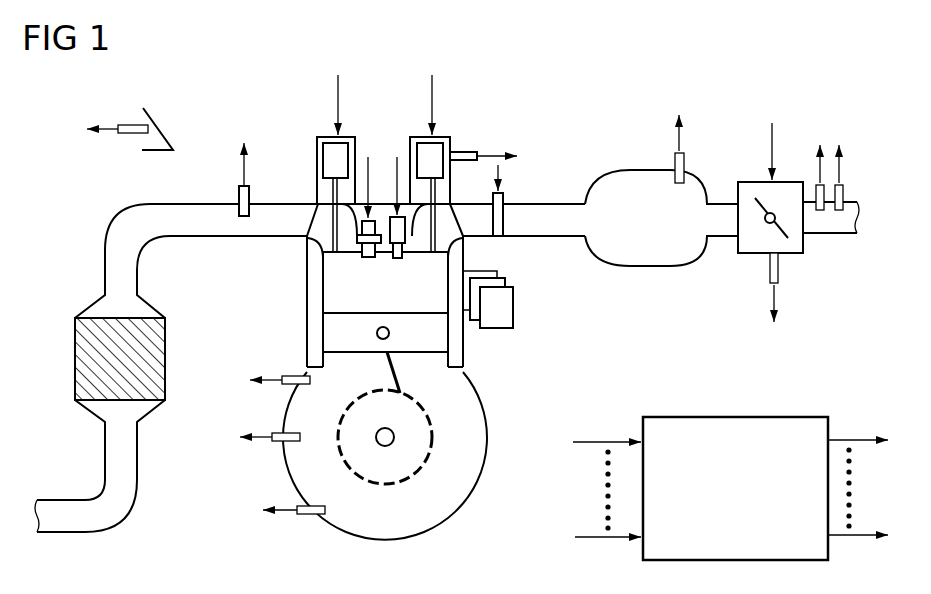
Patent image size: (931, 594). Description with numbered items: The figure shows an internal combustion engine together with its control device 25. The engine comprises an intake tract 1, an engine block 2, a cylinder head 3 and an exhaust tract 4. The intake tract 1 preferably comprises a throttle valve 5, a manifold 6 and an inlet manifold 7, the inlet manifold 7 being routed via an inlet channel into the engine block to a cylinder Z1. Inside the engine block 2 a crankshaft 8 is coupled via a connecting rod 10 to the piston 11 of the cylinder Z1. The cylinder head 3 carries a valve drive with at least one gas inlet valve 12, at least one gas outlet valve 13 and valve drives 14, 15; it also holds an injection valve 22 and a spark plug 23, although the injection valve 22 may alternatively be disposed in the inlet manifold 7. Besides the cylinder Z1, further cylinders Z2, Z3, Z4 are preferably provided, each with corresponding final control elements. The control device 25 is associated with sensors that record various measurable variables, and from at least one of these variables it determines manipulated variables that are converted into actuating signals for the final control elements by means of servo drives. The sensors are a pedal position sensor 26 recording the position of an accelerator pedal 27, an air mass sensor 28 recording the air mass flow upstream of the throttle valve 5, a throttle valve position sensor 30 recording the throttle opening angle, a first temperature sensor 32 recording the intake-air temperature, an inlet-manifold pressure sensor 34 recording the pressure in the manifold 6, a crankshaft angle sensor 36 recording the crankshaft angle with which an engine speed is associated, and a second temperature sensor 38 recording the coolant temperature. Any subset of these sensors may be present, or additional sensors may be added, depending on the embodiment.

The intake tract 1 is at (679, 280).
The engine block 2 is at (290, 301).
The cylinder head 3 is at (450, 103).
The exhaust tract 4 is at (100, 218).
The throttle valve 5 is at (750, 186).
The manifold 6 is at (692, 252).
The inlet manifold 7 is at (562, 210).
The crankshaft 8 is at (393, 437).
The connecting rod 10 is at (388, 380).
The piston 11 is at (418, 343).
The gas inlet valve 12 is at (430, 258).
The gas outlet valve 13 is at (310, 268).
The valve drive 14 is at (428, 148).
The valve drive 15 is at (328, 147).
The injection valve 22 is at (397, 258).
The spark plug 23 is at (363, 258).
The control device 25 is at (760, 422).
The pedal position sensor 26 is at (128, 125).
The accelerator pedal 27 is at (160, 128).
The air mass sensor 28 is at (818, 190).
The throttle valve position sensor 30 is at (780, 266).
The first temperature sensor 32 is at (841, 193).
The inlet-manifold pressure sensor 34 is at (675, 158).
The crankshaft angle sensor 36 is at (283, 442).
The second temperature sensor 38 is at (284, 377).
The cylinder Z1 is at (456, 333).
The cylinder Z2 is at (512, 310).
The cylinder Z3 is at (505, 292).
The cylinder Z4 is at (497, 275).